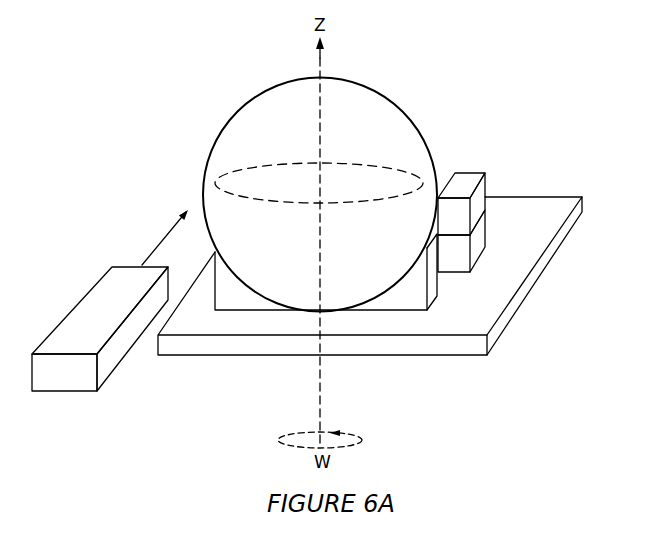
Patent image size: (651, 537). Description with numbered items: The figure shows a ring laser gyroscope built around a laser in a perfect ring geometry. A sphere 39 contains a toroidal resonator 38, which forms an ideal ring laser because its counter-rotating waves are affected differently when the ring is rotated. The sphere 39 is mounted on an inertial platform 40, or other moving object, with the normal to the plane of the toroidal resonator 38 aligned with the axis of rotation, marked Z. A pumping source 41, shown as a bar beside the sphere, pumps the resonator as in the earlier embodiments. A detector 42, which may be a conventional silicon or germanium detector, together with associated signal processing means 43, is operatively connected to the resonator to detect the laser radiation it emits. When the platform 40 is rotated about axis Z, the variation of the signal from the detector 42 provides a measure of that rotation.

The toroidal resonator 38 is at (424, 178).
The sphere 39 is at (386, 96).
The inertial platform 40 is at (578, 212).
The pumping source 41 is at (83, 308).
The detector 42 is at (478, 203).
The signal processing means 43 is at (478, 238).